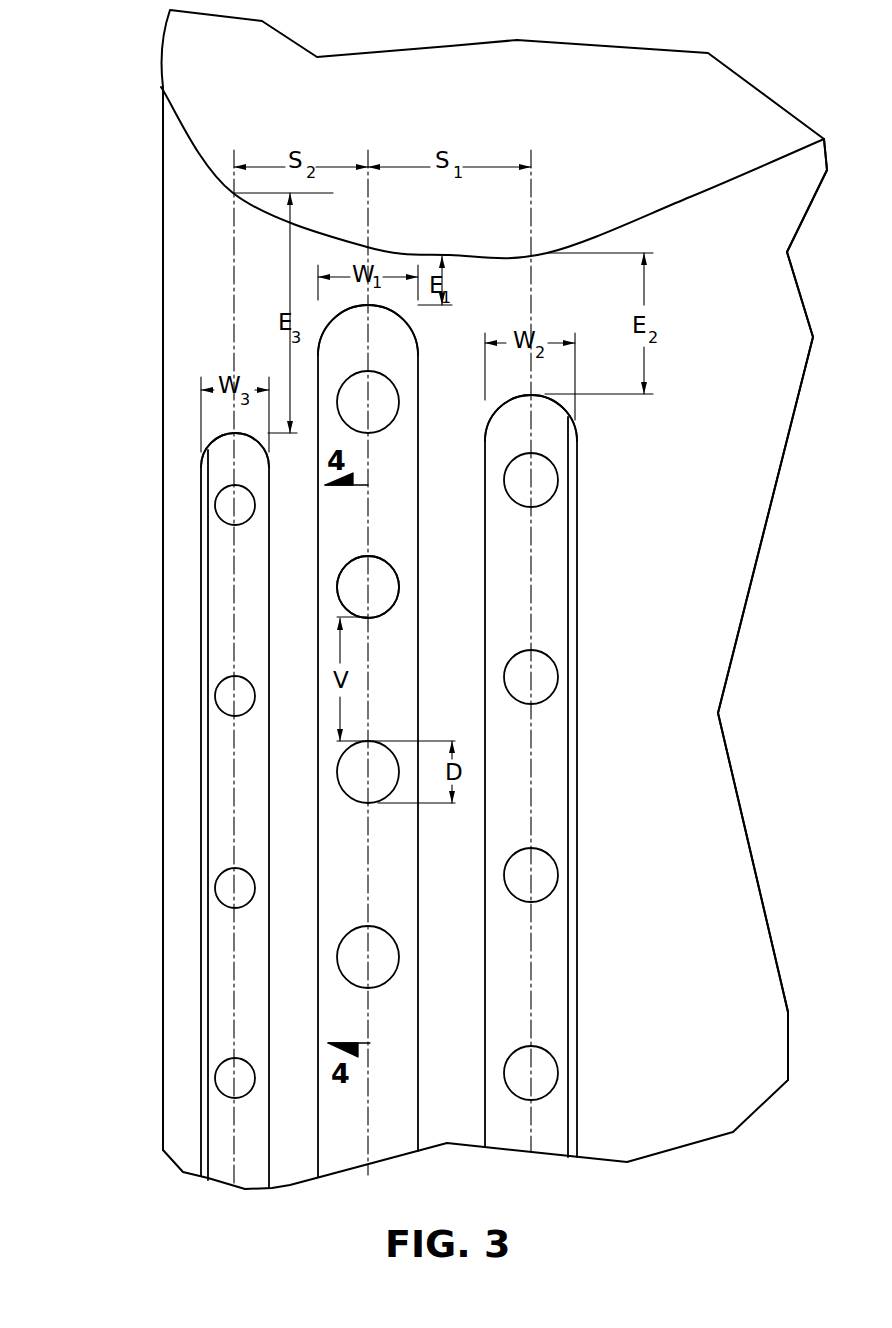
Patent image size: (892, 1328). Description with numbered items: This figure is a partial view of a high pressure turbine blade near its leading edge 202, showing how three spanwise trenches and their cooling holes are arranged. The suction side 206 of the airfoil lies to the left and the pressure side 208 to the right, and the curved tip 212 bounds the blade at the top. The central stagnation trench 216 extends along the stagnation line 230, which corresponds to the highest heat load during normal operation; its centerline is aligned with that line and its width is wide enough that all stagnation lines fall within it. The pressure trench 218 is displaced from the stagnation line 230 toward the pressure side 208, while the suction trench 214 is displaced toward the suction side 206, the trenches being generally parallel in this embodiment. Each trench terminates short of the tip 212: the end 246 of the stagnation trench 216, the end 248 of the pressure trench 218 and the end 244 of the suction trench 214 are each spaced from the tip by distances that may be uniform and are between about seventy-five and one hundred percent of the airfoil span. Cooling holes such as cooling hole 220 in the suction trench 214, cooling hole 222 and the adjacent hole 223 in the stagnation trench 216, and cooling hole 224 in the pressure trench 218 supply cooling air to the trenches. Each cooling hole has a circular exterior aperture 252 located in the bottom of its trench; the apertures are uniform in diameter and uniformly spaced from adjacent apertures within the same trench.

The leading edge 202 is at (190, 345).
The suction side 206 is at (162, 200).
The pressure side 208 is at (692, 392).
The tip 212 is at (690, 163).
The suction trench 214 is at (220, 472).
The stagnation trench 216 is at (338, 327).
The pressure trench 218 is at (550, 578).
The cooling hole 220 is at (223, 890).
The cooling hole 222 is at (377, 580).
The adjacent hole in second slot 223 is at (382, 757).
The cooling hole 224 is at (550, 880).
The stagnation line 230 is at (367, 157).
The end of suction trench 244 is at (211, 431).
The end of stagnation trench 246 is at (330, 302).
The end of pressure trench 248 is at (554, 388).
The exterior aperture 252 is at (381, 560).